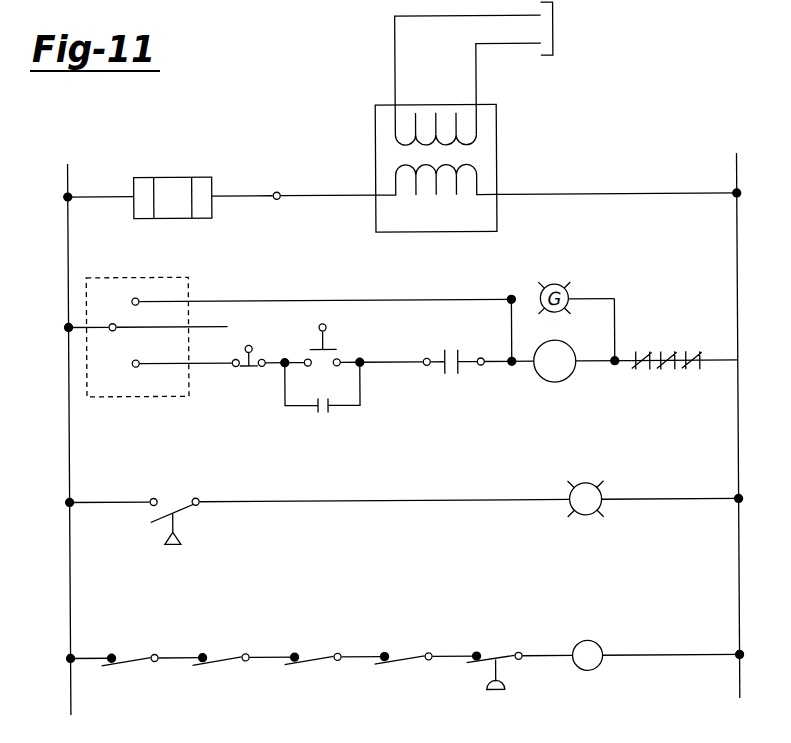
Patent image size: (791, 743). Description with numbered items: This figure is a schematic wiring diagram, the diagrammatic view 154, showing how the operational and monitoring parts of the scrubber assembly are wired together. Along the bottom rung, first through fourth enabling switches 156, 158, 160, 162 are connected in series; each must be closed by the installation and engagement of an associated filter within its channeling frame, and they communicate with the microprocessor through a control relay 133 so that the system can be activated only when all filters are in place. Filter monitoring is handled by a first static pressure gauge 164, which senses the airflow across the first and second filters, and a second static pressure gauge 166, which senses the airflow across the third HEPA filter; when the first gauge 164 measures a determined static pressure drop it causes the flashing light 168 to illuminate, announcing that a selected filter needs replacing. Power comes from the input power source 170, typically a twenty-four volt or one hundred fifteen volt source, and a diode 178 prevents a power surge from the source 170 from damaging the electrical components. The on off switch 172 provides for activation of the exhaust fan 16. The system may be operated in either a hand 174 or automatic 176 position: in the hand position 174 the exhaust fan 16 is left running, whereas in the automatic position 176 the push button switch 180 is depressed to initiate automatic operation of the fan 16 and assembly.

The exhaust fan 16 is at (555, 383).
The control relay 133 is at (588, 636).
The diagrammatic view 154 is at (333, 142).
The first enabling switch 156 is at (128, 646).
The second enabling switch 158 is at (220, 646).
The third enabling switch 160 is at (318, 646).
The fourth enabling switch 162 is at (408, 646).
The first static pressure gauge 164 is at (181, 485).
The second static pressure gauge 166 is at (502, 646).
The flashing light 168 is at (585, 485).
The input power source 170 is at (520, 91).
The on off switch 172 is at (212, 316).
The hand position 174 is at (153, 262).
The automatic position 176 is at (165, 410).
The diode 178 is at (173, 176).
The push button switch 180 is at (313, 429).